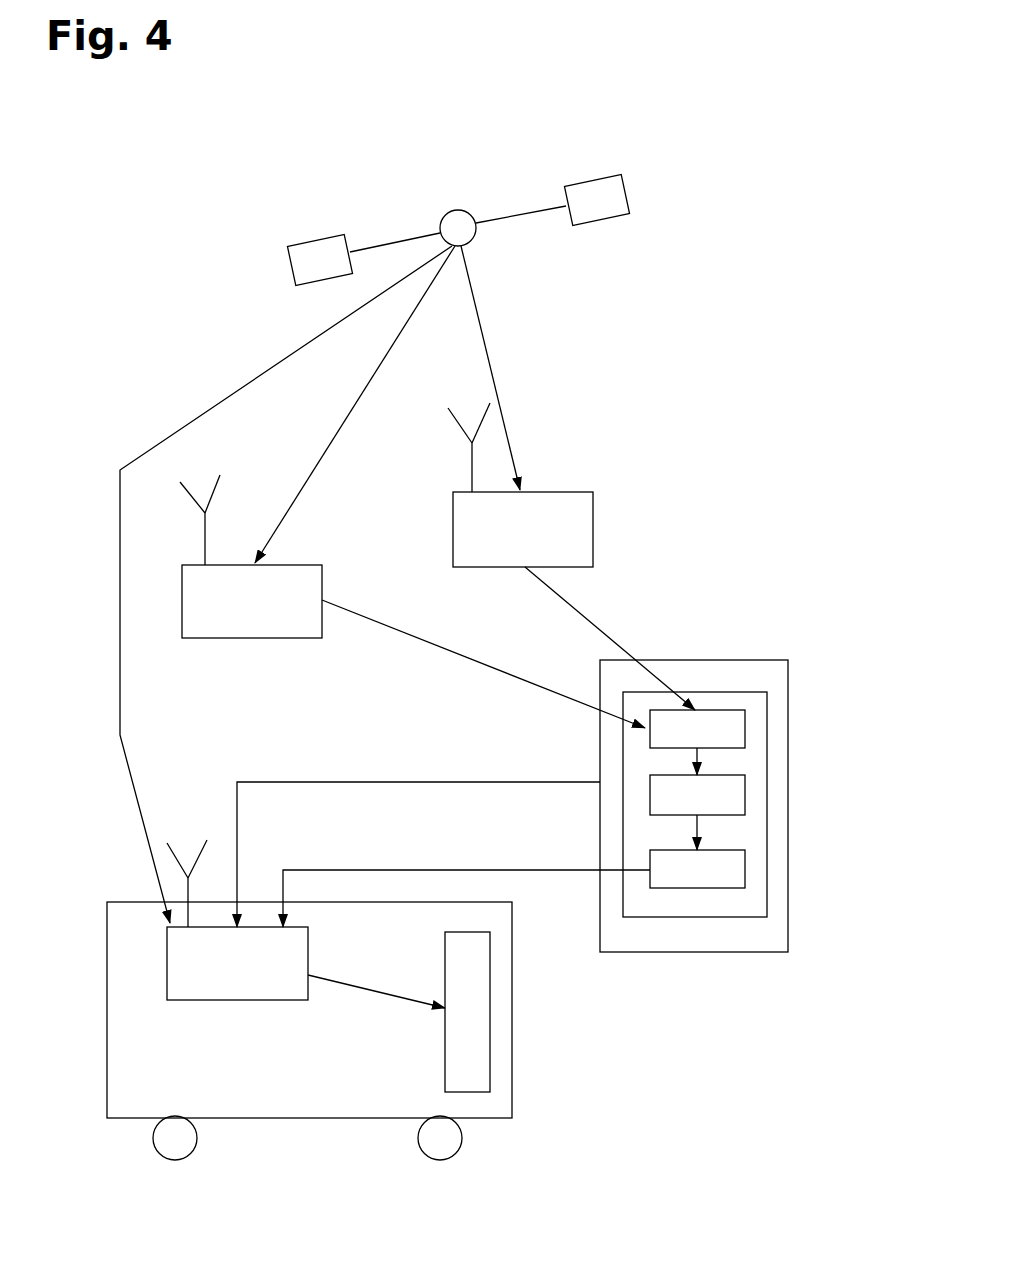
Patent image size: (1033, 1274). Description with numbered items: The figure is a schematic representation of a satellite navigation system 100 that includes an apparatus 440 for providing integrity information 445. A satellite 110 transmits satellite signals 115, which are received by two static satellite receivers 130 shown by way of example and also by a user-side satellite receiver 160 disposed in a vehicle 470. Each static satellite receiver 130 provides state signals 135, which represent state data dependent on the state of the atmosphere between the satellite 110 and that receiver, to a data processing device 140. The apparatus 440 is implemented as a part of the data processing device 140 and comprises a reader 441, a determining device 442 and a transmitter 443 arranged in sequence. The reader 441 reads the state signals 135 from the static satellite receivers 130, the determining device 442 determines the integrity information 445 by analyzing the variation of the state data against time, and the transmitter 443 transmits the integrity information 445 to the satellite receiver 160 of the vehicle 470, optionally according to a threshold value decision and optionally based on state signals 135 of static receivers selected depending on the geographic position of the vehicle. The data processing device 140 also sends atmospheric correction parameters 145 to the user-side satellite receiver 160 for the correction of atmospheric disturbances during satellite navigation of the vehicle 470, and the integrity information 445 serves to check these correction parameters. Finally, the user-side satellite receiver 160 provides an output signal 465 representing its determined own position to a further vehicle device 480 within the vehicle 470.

The satellite navigation system 100 is at (245, 134).
The satellite 110 is at (453, 210).
The satellite signals 115 is at (186, 428).
The static satellite receiver 130 is at (200, 640).
The state signals 135 is at (590, 620).
The data processing device 140 is at (695, 660).
The atmospheric correction parameters 145 is at (443, 782).
The user-side satellite receiver 160 is at (167, 962).
The apparatus 440 is at (760, 660).
The reader 441 is at (745, 728).
The determining device 442 is at (745, 795).
The transmitter 443 is at (745, 868).
The integrity information 445 is at (310, 870).
The output signal 465 is at (358, 985).
The vehicle 470 is at (512, 1070).
The further vehicle device 480 is at (490, 1018).